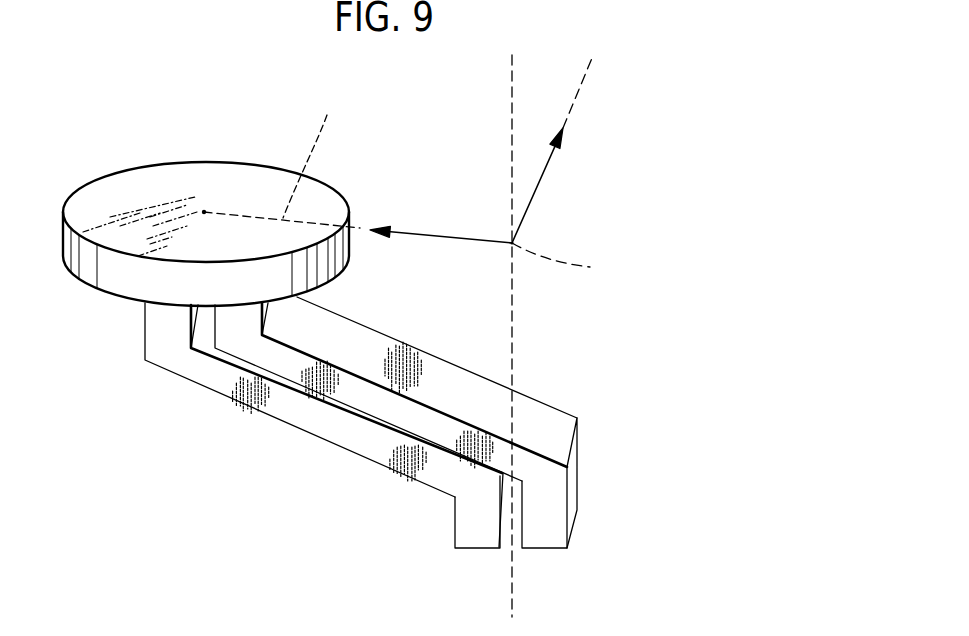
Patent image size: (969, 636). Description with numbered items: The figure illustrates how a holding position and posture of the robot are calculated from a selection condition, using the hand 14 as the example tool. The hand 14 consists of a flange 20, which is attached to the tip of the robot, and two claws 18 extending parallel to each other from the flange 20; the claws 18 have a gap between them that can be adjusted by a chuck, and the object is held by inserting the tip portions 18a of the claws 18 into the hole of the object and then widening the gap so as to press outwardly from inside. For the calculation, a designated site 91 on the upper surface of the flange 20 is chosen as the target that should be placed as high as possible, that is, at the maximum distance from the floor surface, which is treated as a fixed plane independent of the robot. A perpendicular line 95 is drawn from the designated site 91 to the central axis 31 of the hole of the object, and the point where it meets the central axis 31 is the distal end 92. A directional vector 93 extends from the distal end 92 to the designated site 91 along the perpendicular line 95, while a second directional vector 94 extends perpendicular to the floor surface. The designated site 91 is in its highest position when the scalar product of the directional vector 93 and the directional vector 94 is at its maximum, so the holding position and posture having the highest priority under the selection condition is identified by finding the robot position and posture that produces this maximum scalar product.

The hand 14 is at (190, 437).
The claws 18 is at (538, 415).
The tip portions 18a is at (473, 535).
The flange 20 is at (127, 200).
The central axis 31 is at (510, 126).
The designated site 91 is at (205, 210).
The distal end 92 is at (570, 263).
The directional vector 93 is at (427, 232).
The directional vector 94 is at (545, 170).
The perpendicular line 95 is at (315, 150).